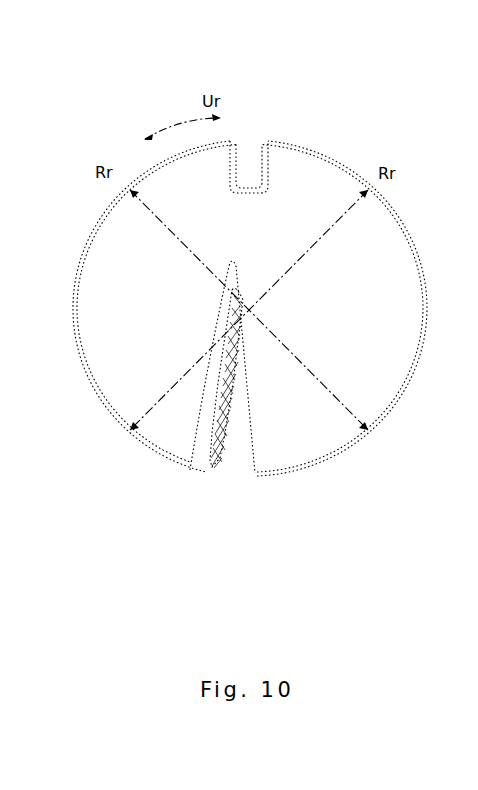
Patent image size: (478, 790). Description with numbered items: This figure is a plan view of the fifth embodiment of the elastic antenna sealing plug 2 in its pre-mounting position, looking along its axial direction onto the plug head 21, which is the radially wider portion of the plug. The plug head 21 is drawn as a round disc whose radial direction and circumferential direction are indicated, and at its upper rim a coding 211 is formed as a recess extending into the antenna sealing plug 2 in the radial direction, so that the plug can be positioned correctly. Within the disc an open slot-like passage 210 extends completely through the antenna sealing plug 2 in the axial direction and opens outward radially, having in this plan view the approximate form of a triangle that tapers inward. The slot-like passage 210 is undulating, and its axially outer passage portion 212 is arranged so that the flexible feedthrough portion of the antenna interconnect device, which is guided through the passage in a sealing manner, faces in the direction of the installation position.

The antenna sealing plug 2 is at (356, 92).
The plug head 21 is at (356, 307).
The coding 211 is at (247, 160).
The slot-like passage 210 is at (235, 442).
The passage portion 212 is at (203, 410).